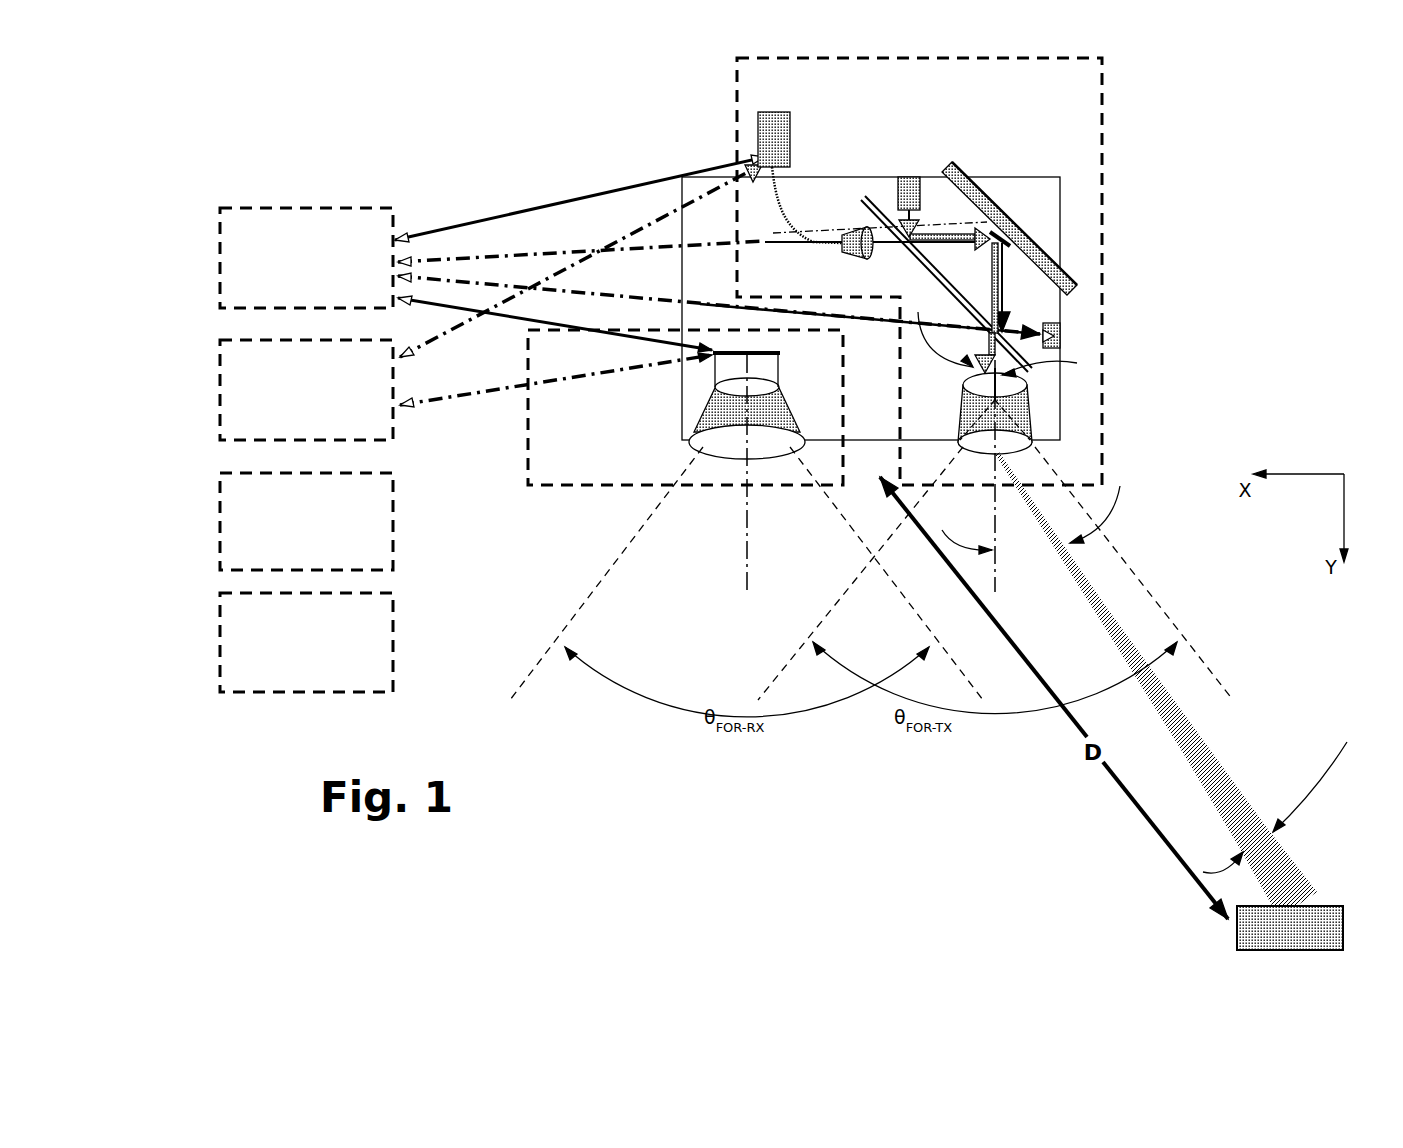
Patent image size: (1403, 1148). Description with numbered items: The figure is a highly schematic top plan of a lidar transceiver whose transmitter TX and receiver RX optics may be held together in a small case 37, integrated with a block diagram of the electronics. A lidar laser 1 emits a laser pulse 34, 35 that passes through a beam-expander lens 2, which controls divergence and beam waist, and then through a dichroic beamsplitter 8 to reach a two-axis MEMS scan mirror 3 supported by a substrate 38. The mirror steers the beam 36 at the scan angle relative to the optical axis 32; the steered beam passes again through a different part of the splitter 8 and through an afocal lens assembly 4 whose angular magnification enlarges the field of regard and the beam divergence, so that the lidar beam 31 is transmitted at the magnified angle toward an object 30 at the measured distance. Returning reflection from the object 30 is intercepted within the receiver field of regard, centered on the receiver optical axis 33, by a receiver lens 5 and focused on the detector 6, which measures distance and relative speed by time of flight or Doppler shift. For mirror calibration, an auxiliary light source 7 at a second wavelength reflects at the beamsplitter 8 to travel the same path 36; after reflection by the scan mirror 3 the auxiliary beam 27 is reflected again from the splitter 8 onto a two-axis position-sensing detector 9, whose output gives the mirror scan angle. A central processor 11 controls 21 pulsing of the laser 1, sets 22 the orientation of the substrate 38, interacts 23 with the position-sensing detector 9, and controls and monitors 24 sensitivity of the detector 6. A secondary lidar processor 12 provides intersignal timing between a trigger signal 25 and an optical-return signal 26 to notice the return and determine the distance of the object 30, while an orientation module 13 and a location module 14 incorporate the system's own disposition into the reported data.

The lidar laser 1 is at (758, 133).
The beam-expander lens 2 is at (830, 232).
The MEMS scan mirror 3 is at (1012, 234).
The afocal lens assembly 4 is at (1027, 405).
The receiver lens 5 is at (718, 435).
The detector 6 is at (730, 341).
The auxiliary MEMS-calibration light source 7 is at (918, 187).
The dichroic beamsplitter 8 is at (925, 262).
The two-axis position-sensing detector 9 is at (1063, 328).
The central processor 11 is at (293, 258).
The lidar processor 12 is at (293, 390).
The orientation module 13 is at (293, 521).
The location module 14 is at (293, 642).
The laser control signal 21 is at (580, 198).
The substrate orientation control signal 22 is at (692, 244).
The PSD interaction signal 23 is at (719, 306).
The detector sensitivity control signal 24 is at (555, 324).
The lidar trigger signal 25 is at (581, 261).
The optical-return signal 26 is at (556, 386).
The auxiliary beam 27 is at (1010, 287).
The object 30 is at (1308, 936).
The lidar beam 31 is at (1171, 685).
The optical axis 32 is at (1031, 476).
The receiver optical axis 33 is at (763, 473).
The laser pulse 34 is at (787, 188).
The laser beam 35 is at (835, 250).
The steered beam path 36 is at (958, 308).
The case 37 is at (815, 271).
The mirror substrate 38 is at (1180, 248).